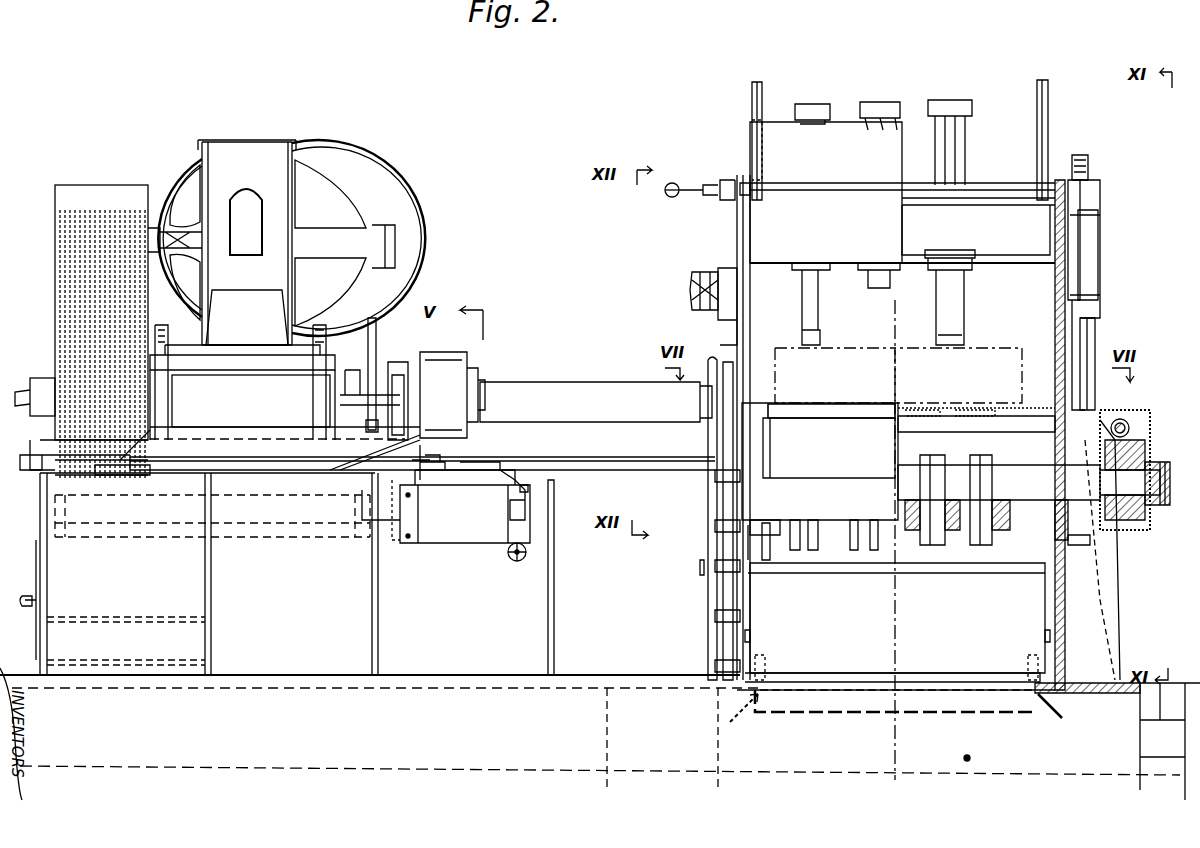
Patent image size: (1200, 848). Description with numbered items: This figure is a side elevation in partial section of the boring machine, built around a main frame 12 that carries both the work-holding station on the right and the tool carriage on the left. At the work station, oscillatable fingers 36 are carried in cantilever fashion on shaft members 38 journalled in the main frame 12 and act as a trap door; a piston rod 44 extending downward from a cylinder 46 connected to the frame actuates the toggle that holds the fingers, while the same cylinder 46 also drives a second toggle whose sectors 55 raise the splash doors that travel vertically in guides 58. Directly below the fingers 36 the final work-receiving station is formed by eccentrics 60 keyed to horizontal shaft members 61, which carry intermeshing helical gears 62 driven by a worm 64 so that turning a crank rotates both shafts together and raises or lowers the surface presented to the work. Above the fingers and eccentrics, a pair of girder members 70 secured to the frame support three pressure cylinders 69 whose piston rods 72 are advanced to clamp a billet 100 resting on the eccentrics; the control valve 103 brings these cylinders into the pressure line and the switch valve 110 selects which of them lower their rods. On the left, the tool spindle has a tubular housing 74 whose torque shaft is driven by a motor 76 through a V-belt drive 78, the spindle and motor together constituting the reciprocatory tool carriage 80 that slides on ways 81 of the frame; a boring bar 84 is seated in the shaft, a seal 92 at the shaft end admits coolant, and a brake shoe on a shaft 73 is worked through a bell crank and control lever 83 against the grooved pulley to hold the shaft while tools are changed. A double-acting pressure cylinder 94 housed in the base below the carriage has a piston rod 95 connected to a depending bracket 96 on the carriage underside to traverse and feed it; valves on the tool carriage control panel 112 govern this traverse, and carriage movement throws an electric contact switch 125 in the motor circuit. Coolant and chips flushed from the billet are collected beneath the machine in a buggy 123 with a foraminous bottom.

The main frame 12 is at (737, 175).
The fingers 36 is at (985, 395).
The shaft members 38 is at (718, 405).
The piston rod 44 is at (1092, 338).
The cylinder 46 is at (1092, 262).
The sectors 55 is at (752, 92).
The guides 58 is at (750, 265).
The eccentrics 60 is at (815, 545).
The shaft members 61 is at (999, 500).
The helical gears 62 is at (1135, 445).
The right-hand worm 64 is at (1128, 422).
The pressure cylinders 69 is at (813, 104).
The girder members 70 is at (1030, 245).
The piston rods 72 is at (802, 318).
The shaft 73 is at (222, 370).
The tubular housing 74 is at (452, 395).
The motor 76 is at (243, 168).
The V-belt drive 78 is at (55, 220).
The tool carriage 80 is at (285, 401).
The ways 81 is at (520, 452).
The control lever 83 is at (380, 345).
The boring bar 84 is at (583, 380).
The seal 92 is at (36, 378).
The double-acting pressure cylinder 94 is at (287, 522).
The piston rod 95 is at (392, 560).
The depending bracket 96 is at (370, 440).
The billets 100 is at (990, 350).
The valve 103 is at (692, 280).
The switch valve 110 is at (660, 195).
The tool carriage control panel 112 is at (472, 495).
The buggy 123 is at (897, 622).
The electric contact switch 125 is at (528, 490).